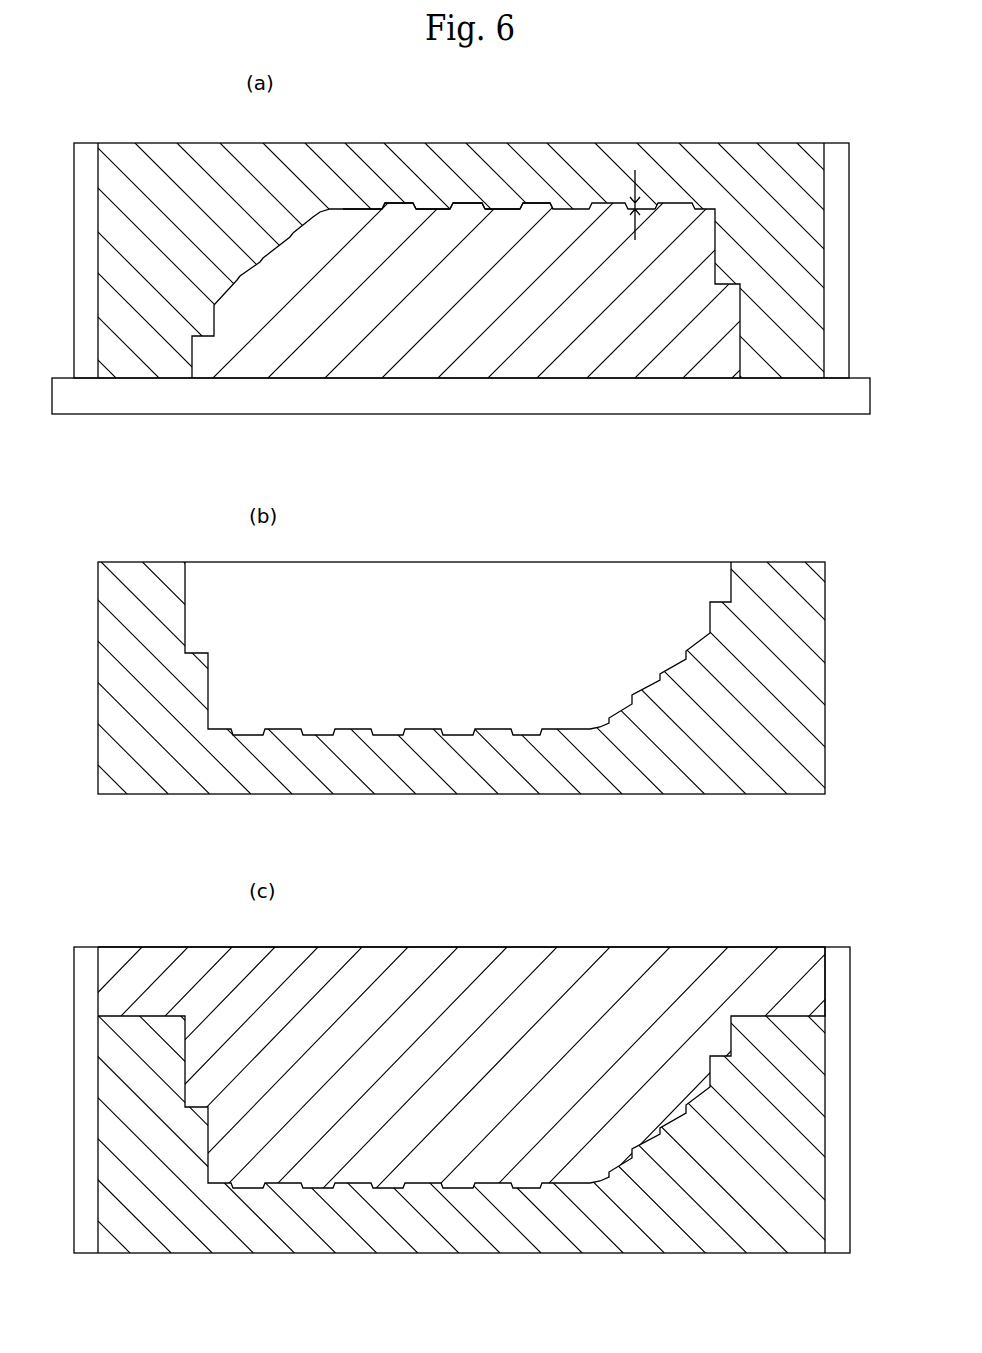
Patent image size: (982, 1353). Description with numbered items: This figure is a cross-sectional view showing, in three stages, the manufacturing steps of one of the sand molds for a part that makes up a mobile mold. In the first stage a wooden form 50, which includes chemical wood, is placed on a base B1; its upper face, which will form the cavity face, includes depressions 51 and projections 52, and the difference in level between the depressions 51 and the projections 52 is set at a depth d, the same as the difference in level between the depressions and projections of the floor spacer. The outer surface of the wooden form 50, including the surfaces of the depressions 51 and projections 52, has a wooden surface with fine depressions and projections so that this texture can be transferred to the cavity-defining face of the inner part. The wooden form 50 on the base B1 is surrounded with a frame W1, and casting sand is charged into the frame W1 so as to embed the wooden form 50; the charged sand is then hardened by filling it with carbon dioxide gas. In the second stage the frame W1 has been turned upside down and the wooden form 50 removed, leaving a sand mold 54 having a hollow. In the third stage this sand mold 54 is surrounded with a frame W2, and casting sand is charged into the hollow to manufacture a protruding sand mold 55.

The wooden form 50 is at (642, 335).
The depressions 51 is at (358, 206).
The projections 52 is at (316, 216).
The depth d is at (645, 203).
The frame W1 is at (838, 148).
The base B1 is at (483, 402).
The sand mold 54 is at (752, 570).
The protruding sand mold 55 is at (595, 997).
The frame W2 is at (830, 950).